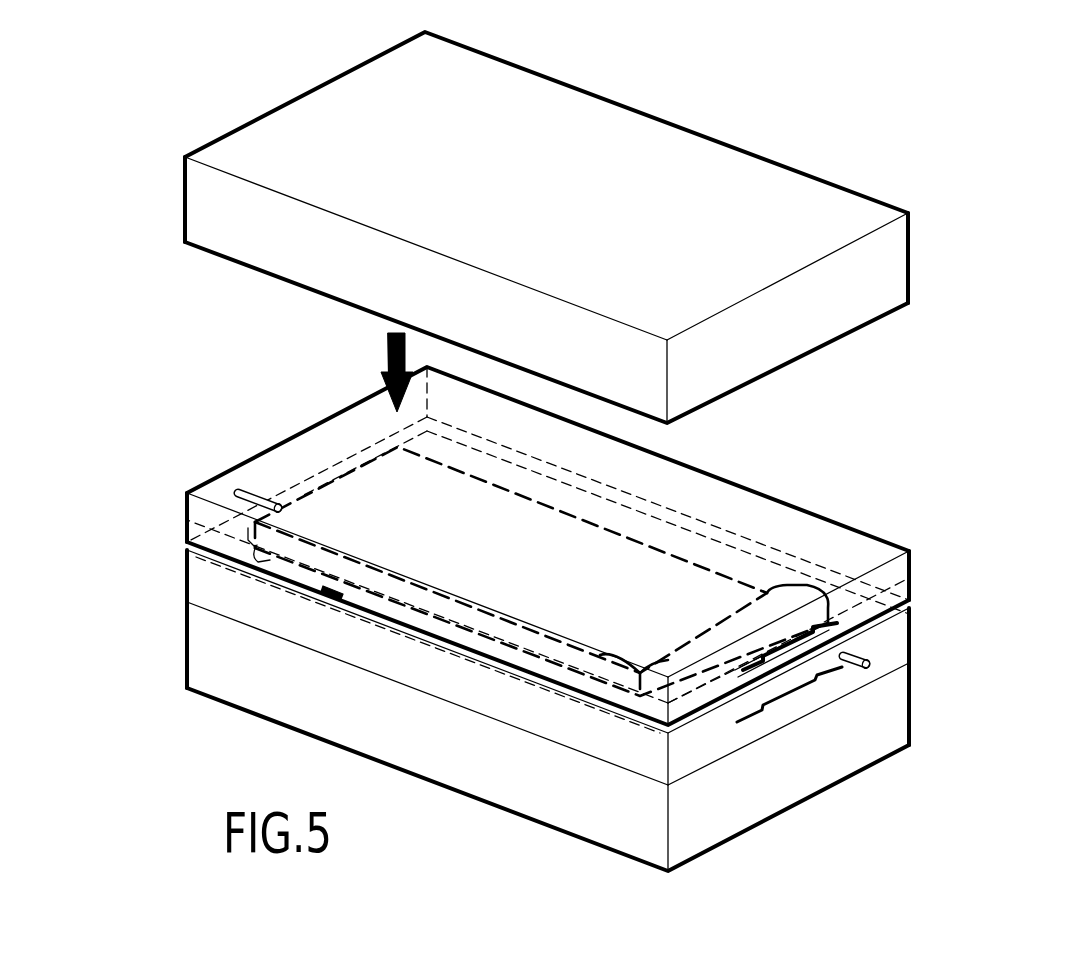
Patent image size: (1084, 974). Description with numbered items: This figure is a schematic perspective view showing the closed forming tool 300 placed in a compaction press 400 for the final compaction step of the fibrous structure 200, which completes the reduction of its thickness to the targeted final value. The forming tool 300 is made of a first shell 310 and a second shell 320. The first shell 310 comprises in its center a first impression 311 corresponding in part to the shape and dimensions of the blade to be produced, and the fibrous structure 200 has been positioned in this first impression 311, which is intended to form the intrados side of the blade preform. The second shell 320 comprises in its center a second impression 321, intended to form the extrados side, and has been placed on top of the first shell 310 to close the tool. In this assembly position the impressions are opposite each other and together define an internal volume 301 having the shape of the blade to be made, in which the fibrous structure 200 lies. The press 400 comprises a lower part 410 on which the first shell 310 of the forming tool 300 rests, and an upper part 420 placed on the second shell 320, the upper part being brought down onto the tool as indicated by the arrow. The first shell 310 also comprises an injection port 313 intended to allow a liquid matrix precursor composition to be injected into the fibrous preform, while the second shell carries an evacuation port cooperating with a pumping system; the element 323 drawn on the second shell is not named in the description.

The fibrous structure 200 is at (661, 545).
The forming tool 300 is at (477, 576).
The internal volume 301 is at (315, 600).
The first shell 310 is at (511, 667).
The first impression 311 is at (332, 592).
The injection port 313 is at (848, 668).
The second shell 320 is at (184, 521).
The second impression 321 is at (250, 545).
The positioning pin 323 is at (255, 494).
The compaction press 400 is at (573, 451).
The lower part 410 is at (915, 700).
The upper part 420 is at (770, 372).